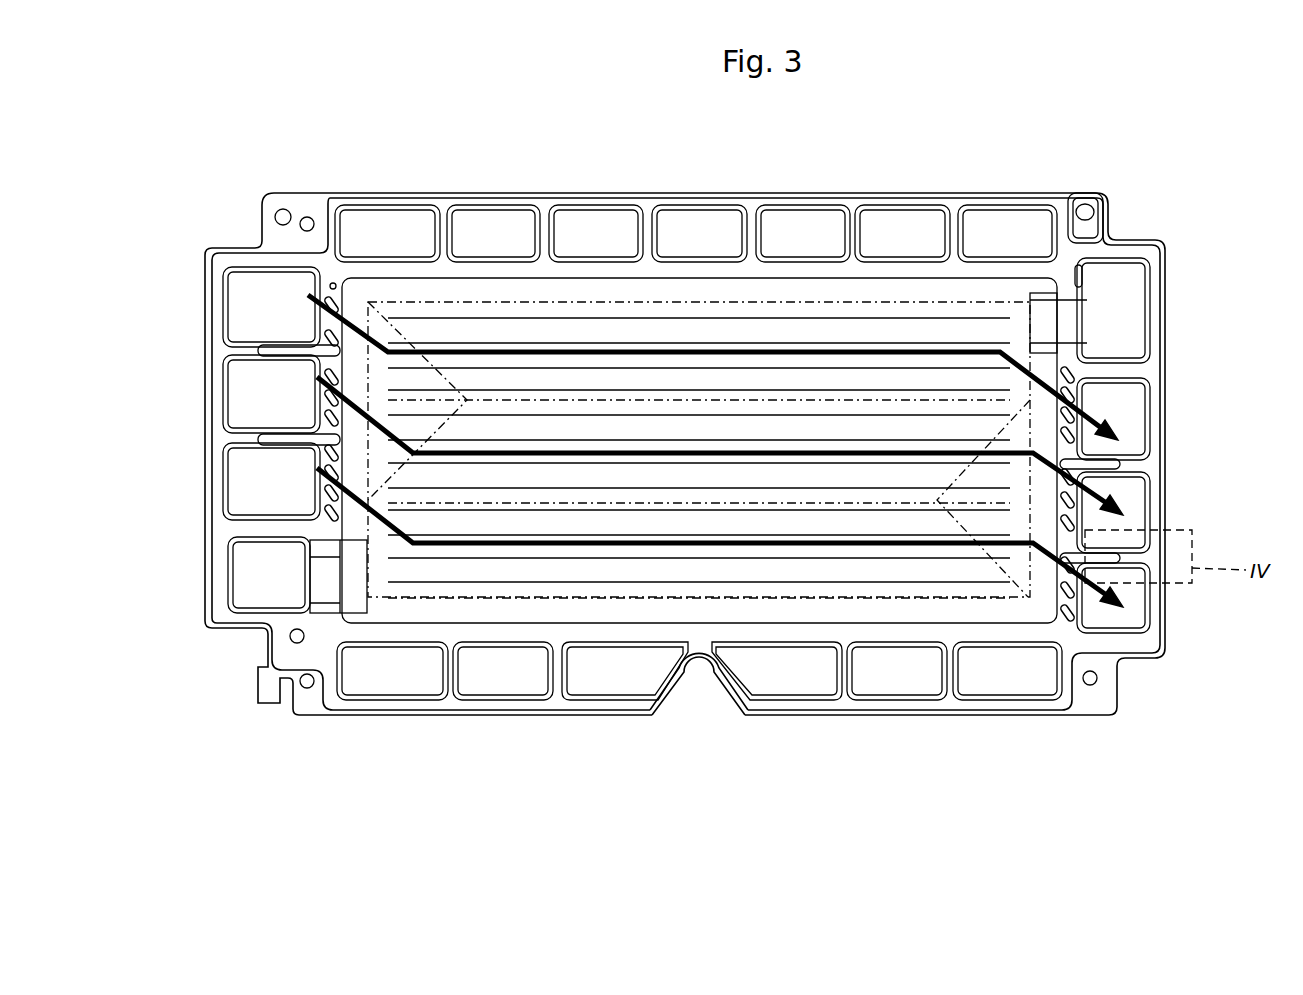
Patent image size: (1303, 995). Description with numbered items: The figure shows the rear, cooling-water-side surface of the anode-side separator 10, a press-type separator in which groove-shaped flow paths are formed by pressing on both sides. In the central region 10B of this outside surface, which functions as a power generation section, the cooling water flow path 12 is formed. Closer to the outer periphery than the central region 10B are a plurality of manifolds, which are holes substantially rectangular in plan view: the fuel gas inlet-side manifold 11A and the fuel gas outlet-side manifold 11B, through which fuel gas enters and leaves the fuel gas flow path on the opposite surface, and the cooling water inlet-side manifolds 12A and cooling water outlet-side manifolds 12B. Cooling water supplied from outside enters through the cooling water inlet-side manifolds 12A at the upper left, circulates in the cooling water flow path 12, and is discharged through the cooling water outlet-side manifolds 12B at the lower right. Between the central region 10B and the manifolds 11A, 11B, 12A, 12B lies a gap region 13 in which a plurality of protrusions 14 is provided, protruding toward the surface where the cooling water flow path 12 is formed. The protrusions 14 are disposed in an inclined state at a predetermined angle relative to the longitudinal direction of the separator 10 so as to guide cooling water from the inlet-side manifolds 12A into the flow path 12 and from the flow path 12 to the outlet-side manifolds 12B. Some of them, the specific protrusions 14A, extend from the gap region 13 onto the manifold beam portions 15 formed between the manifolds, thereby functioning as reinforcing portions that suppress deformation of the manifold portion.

The anode-side separator 10 is at (960, 158).
The central region 10B is at (705, 603).
The fuel gas inlet-side manifold 11A is at (1150, 297).
The fuel gas outlet-side manifold 11B is at (226, 570).
The cooling water flow path 12 is at (886, 302).
The cooling water inlet-side manifold 12A is at (220, 467).
The cooling water outlet-side manifold 12B is at (1150, 437).
The gap region 13 is at (330, 535).
The protrusion 14 is at (333, 283).
The specific protrusion 14A is at (287, 343).
The manifold beam portion 15 is at (262, 438).